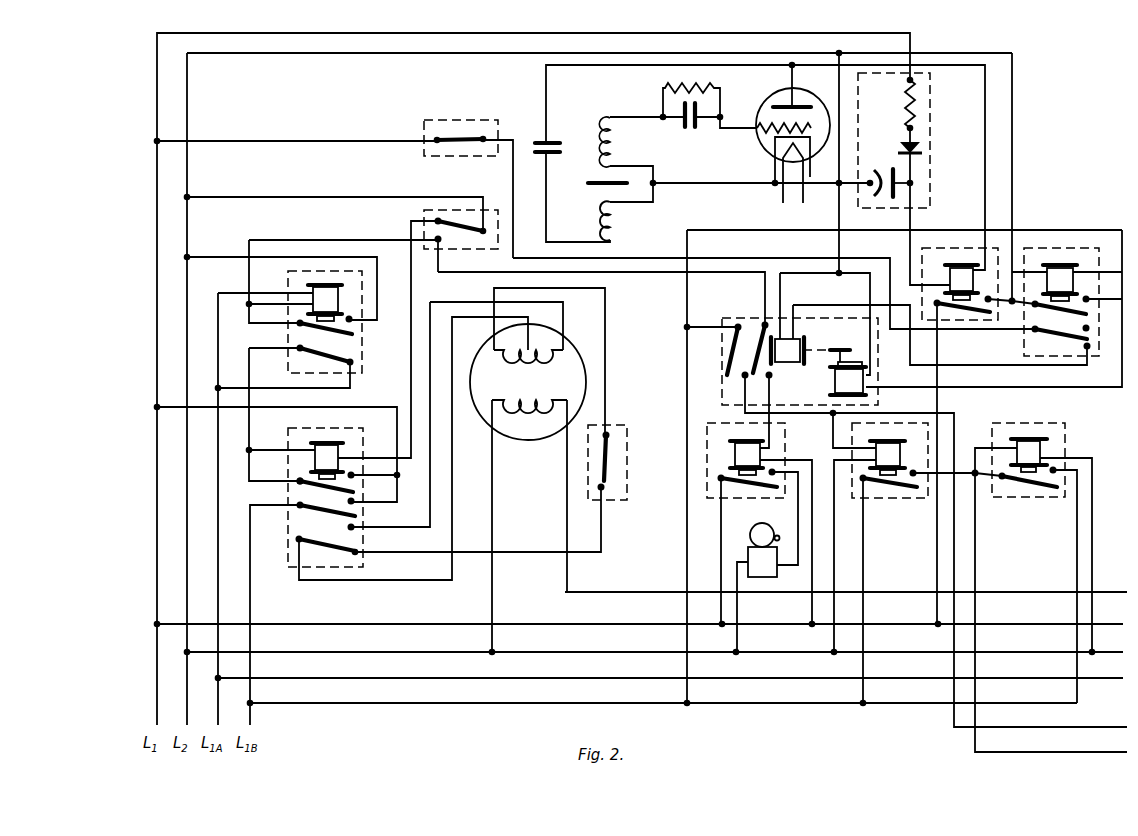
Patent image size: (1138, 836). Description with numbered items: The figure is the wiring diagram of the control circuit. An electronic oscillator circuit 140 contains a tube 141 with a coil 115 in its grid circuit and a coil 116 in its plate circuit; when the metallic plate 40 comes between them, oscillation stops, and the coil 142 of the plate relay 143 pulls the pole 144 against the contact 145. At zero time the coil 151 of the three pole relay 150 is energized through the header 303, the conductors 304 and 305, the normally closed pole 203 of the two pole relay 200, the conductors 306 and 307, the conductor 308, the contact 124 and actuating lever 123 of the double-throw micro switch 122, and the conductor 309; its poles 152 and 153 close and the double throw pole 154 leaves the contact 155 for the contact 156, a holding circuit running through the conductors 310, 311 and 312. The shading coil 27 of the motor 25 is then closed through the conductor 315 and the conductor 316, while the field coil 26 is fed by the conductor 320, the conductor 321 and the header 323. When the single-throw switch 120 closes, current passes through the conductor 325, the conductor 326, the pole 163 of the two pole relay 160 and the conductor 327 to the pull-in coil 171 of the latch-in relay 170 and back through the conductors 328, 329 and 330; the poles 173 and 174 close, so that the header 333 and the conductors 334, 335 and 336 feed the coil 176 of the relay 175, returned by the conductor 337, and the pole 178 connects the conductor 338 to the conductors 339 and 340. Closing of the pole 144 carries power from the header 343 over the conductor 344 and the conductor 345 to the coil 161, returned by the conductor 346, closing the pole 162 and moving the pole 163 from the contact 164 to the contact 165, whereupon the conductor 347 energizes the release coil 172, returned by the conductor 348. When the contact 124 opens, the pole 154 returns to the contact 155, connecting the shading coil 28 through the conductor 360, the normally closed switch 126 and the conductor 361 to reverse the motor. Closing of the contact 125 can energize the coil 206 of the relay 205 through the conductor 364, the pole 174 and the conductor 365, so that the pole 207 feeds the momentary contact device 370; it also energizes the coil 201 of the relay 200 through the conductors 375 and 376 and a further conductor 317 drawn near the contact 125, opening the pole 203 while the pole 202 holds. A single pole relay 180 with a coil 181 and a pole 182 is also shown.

The motor 25 is at (568, 392).
The field coil 26 is at (530, 418).
The shading coil 27 is at (565, 353).
The shading coil 28 is at (494, 352).
The plate 40 is at (582, 177).
The coil 115 is at (603, 125).
The coil 116 is at (603, 218).
The single-throw snap action switch 120 is at (476, 117).
The double-throw snap action switch 122 is at (476, 207).
The actuating lever 123 is at (462, 233).
The contact 124 is at (441, 217).
The contact 125 is at (442, 244).
The normally closed single-throw snap action switch 126 is at (628, 474).
The electronic oscillator circuit 140 is at (631, 95).
The tube 141 is at (783, 94).
The coil 142 is at (951, 278).
The plate relay 143 is at (966, 223).
The pole 144 is at (967, 314).
The contact 145 is at (990, 296).
The three pole relay 150 is at (341, 603).
The coil 151 is at (334, 442).
The pole 152 is at (360, 492).
The pole 153 is at (320, 518).
The double throw pole 154 is at (330, 553).
The contact 155 is at (352, 556).
The contact 156 is at (356, 525).
The two pole relay 160 is at (1091, 223).
The coil 161 is at (1078, 278).
The single throw pole 162 is at (1072, 318).
The double throw pole 163 is at (1072, 343).
The contact 164 is at (1089, 350).
The contact 165 is at (1092, 326).
The latch-in relay 170 is at (761, 303).
The pull-in coil 171 is at (784, 364).
The release coil 172 is at (828, 378).
The pole 173 is at (730, 352).
The pole 174 is at (745, 349).
The single pole normally open relay 175 is at (911, 526).
The coil 176 is at (877, 439).
The pole 178 is at (900, 489).
The single pole normally open relay 180 is at (1041, 525).
The coil 181 is at (1016, 439).
The pole 182 is at (1040, 489).
The two pole relay 200 is at (281, 279).
The coil 201 is at (332, 284).
The pole 202 is at (328, 336).
The pole 203 is at (326, 364).
The single pole relay 205 is at (728, 405).
The coil 206 is at (751, 439).
The pole 207 is at (758, 489).
The header 303 is at (348, 678).
The conductor 304 is at (222, 512).
The conductor 305 is at (295, 388).
The conductor 306 is at (250, 433).
The conductor 307 is at (298, 448).
The conductor 308 is at (420, 371).
The conductor 309 is at (300, 197).
The conductor 310 is at (343, 406).
The conductor 311 is at (363, 473).
The conductor 312 is at (281, 484).
The conductor 315 is at (398, 530).
The conductor 316 is at (436, 582).
The conductor 317 is at (305, 240).
The conductor 320 is at (1030, 592).
The conductor 321 is at (493, 515).
The header 323 is at (362, 652).
The conductor 325 is at (290, 140).
The conductor 326 is at (728, 258).
The conductor 327 is at (995, 367).
The conductor 328 is at (790, 275).
The conductor 329 is at (836, 206).
The conductor 330 is at (459, 53).
The header 333 is at (325, 703).
The conductor 334 is at (680, 532).
The conductor 335 is at (689, 320).
The conductor 336 is at (790, 414).
The conductor 337 is at (832, 635).
The conductor 338 is at (864, 562).
The conductor 339 is at (966, 473).
The conductor 340 is at (1035, 752).
The header 343 is at (375, 624).
The conductor 344 is at (937, 395).
The conductor 345 is at (1018, 296).
The conductor 346 is at (1012, 165).
The conductor 347 is at (995, 390).
The conductor 348 is at (870, 329).
The conductor 360 is at (517, 553).
The conductor 361 is at (607, 338).
The conductor 364 is at (810, 593).
The conductor 365 is at (490, 273).
The momentary contact device 370 is at (759, 511).
The conductor 375 is at (220, 352).
The conductor 376 is at (289, 302).